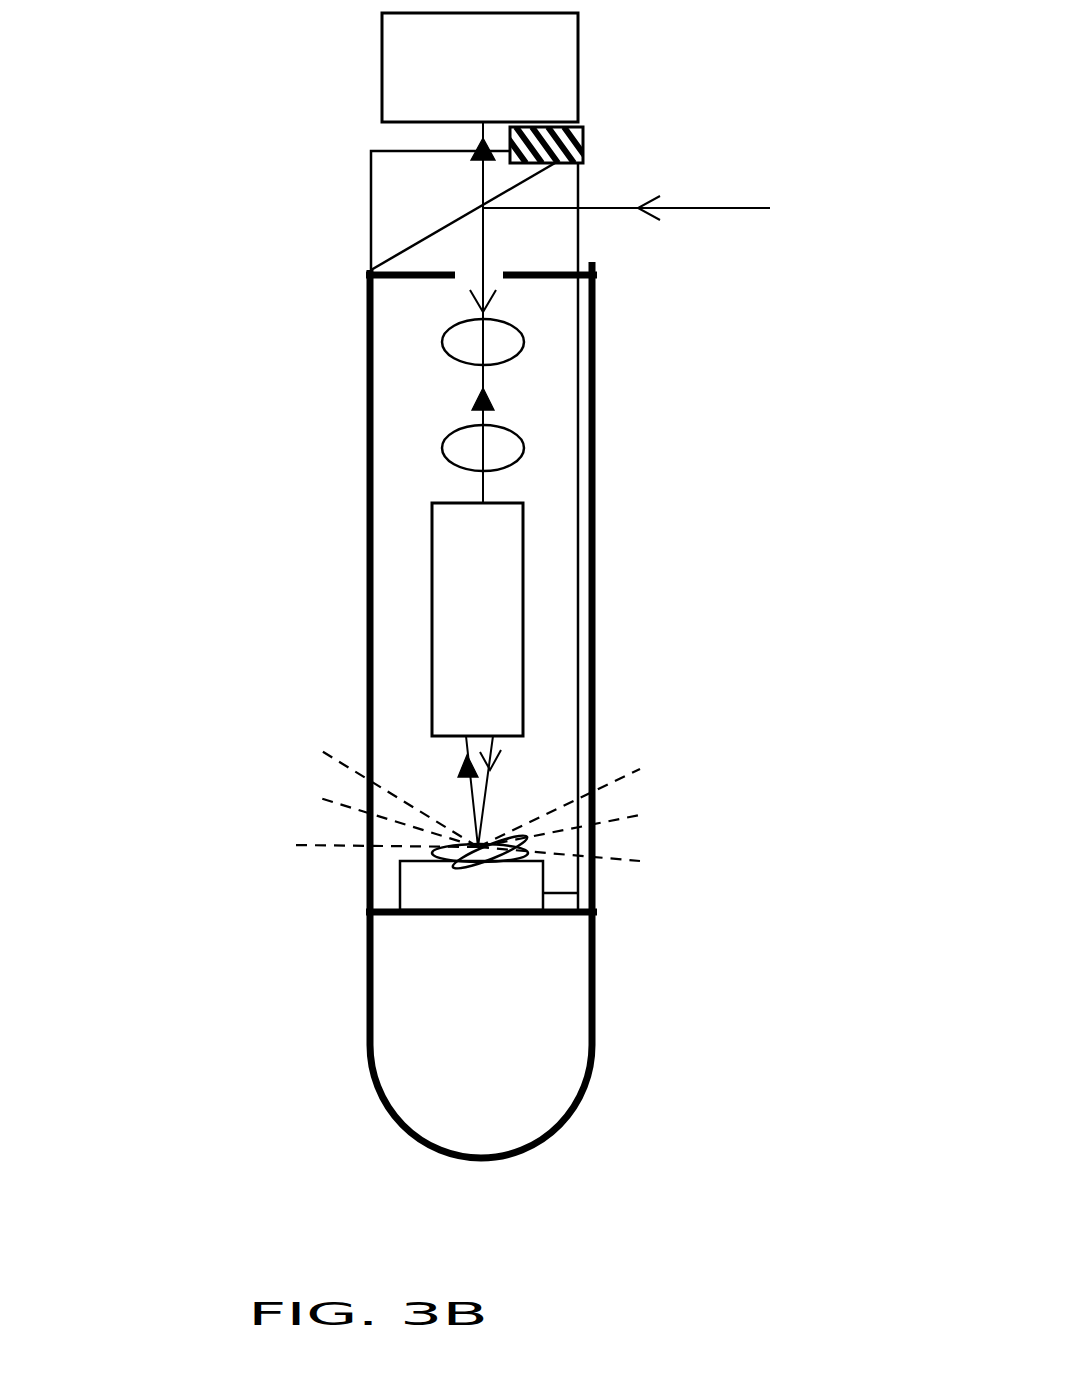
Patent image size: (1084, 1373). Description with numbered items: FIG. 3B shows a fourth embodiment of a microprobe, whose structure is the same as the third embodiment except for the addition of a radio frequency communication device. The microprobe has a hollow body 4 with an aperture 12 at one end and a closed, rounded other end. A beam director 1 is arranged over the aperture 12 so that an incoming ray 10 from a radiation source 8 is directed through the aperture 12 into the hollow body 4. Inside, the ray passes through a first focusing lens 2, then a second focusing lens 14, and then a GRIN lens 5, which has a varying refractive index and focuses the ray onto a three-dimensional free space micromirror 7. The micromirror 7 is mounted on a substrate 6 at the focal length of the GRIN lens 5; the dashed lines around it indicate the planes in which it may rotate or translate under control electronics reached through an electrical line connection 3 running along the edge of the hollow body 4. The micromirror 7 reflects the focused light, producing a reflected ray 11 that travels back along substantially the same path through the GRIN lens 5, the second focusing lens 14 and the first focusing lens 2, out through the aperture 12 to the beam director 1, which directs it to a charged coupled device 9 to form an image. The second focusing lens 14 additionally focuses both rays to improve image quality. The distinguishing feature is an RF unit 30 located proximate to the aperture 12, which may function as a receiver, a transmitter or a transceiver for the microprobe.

The beam director 1 is at (371, 227).
The focusing lens 2 is at (442, 350).
The electrical line connection 3 is at (583, 322).
The hollow body 4 is at (368, 548).
The GRIN lens 5 is at (512, 593).
The substrate 6 is at (418, 883).
The 3-D free space micromirror 7 is at (513, 843).
The radiation source 8 is at (644, 209).
The charged coupled device (CCD) 9 is at (382, 65).
The incoming ray 10 is at (652, 198).
The reflected ray 11 is at (497, 403).
The aperture 12 is at (508, 277).
The second focusing lens 14 is at (455, 446).
The RF unit 30 is at (587, 126).